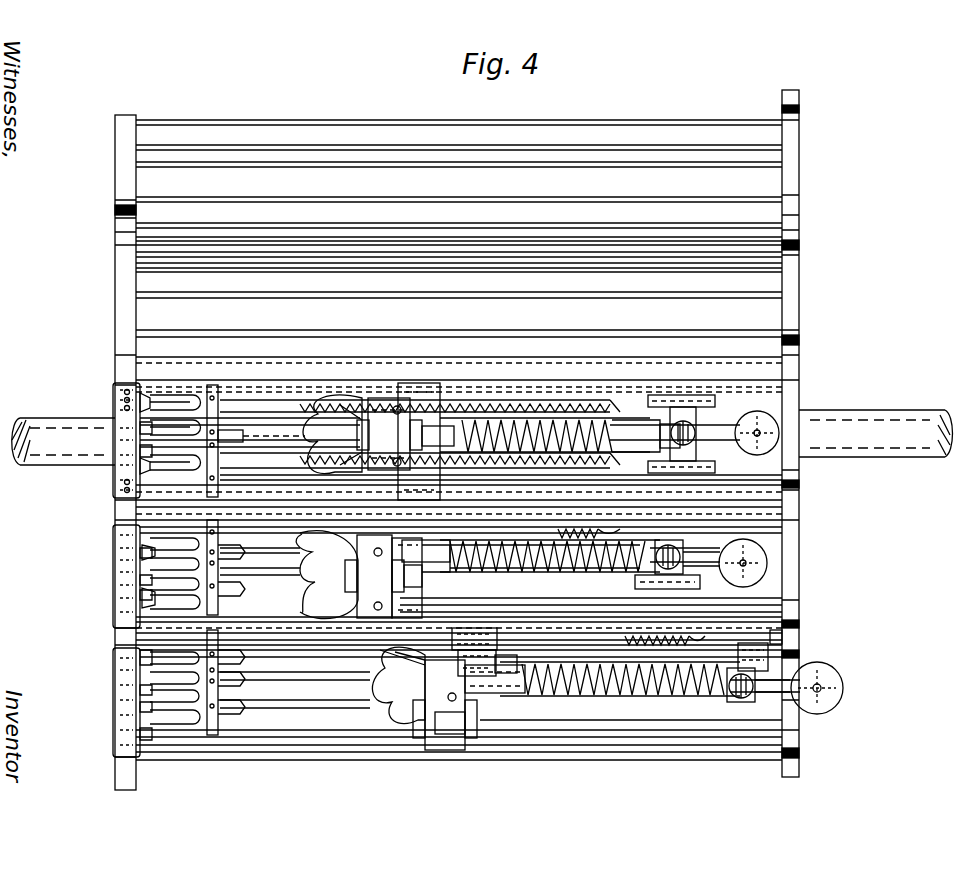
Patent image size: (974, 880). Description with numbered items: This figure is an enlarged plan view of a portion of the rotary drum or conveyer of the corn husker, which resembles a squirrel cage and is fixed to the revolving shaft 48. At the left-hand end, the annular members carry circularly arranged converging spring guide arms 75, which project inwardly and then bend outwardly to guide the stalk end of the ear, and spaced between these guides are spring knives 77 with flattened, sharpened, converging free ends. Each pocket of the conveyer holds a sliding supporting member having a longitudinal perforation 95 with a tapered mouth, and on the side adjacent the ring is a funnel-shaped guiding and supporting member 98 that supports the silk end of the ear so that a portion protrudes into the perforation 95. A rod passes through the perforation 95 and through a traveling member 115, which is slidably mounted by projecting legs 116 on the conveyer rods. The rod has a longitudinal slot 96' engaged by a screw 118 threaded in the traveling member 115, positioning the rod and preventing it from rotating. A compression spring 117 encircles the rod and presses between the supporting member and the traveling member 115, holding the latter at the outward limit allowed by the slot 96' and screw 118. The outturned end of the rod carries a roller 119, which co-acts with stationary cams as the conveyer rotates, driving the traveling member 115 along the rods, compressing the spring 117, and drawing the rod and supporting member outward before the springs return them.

The shaft 48 is at (80, 455).
The guide arms 75 is at (140, 548).
The spring knives 77 is at (140, 612).
The longitudinal perforation 95 is at (505, 688).
The longitudinal slot 96' is at (441, 543).
The funnel-shaped guiding and supporting member 98 is at (388, 718).
The traveling member 115 is at (678, 548).
The projecting legs 116 is at (688, 402).
The compression spring 117 is at (500, 552).
The screw 118 is at (681, 557).
The roller 119 is at (770, 447).